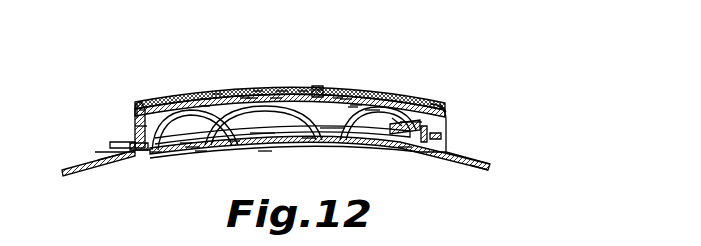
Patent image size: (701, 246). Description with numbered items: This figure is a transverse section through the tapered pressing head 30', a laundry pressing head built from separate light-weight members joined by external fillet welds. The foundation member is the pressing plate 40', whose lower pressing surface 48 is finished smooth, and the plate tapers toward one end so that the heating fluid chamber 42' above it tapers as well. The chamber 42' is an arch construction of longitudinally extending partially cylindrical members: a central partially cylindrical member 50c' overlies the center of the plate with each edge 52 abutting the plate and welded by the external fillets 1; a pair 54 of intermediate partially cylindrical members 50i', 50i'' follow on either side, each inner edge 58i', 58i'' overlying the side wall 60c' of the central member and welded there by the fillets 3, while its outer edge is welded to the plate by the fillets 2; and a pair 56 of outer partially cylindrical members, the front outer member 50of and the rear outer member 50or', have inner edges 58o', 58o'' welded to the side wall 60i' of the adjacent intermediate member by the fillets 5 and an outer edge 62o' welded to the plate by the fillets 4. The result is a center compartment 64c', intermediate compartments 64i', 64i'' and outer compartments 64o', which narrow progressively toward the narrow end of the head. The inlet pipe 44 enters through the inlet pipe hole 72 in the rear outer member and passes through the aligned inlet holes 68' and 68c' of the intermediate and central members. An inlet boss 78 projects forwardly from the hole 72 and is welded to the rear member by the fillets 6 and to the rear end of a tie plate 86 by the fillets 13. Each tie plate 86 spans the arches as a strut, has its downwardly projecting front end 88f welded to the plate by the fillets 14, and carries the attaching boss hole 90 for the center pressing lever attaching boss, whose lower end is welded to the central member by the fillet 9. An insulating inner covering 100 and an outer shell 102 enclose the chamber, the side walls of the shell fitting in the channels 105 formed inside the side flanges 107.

The external fillets 1 is at (308, 138).
The external fillets 2 is at (186, 143).
The external fillets 3 is at (258, 91).
The external fillets 4 is at (138, 156).
The external fillets 5 is at (217, 93).
The external fillets 6 is at (402, 123).
The fillet 9 is at (282, 91).
The external fillets 13 is at (427, 128).
The external fillets 14 is at (120, 162).
The tapered pressing head 30' is at (477, 91).
The pressing plate 40' is at (488, 157).
The heating fluid chamber 42' is at (364, 72).
The inlet pipe 44 is at (443, 140).
The pressing surface 48 is at (477, 170).
The central partially cylindrical member 50c' is at (284, 73).
The intermediate partially cylindrical member 50i' is at (239, 73).
The intermediate partially cylindrical member 50i'' is at (335, 72).
The front outer partially cylindrical member 50of is at (205, 106).
The rear outer partially cylindrical member 50or' is at (391, 82).
The edges 52 is at (233, 141).
The pairs of intermediate partially cylindrical members 54 is at (190, 147).
The pairs of outer partially cylindrical members 56 is at (185, 102).
The inner edge 58i' is at (265, 60).
The inner edge 58i'' is at (312, 53).
The inner edge 58o' is at (208, 58).
The inner edge 58o'' is at (369, 88).
The side wall 60c' is at (282, 168).
The side wall 60i' is at (280, 170).
The outer edge 62o' is at (295, 169).
The center compartment 64c' is at (271, 146).
The intermediate compartment 64i' is at (282, 149).
The intermediate compartment 64i'' is at (334, 154).
The outer compartment 64o' is at (320, 162).
The inlet holes 68' is at (284, 128).
The inlet hole 68c' is at (263, 125).
The inlet pipe hole 72 is at (404, 122).
The inlet boss 78 is at (441, 118).
The tie plate 86 is at (148, 108).
The front end of tie plate 88f is at (136, 128).
The attaching boss hole 90 is at (318, 87).
The insulating inner covering 100 is at (137, 106).
The outer shell 102 is at (139, 114).
The channels 105 is at (115, 144).
The side flanges 107 is at (96, 158).